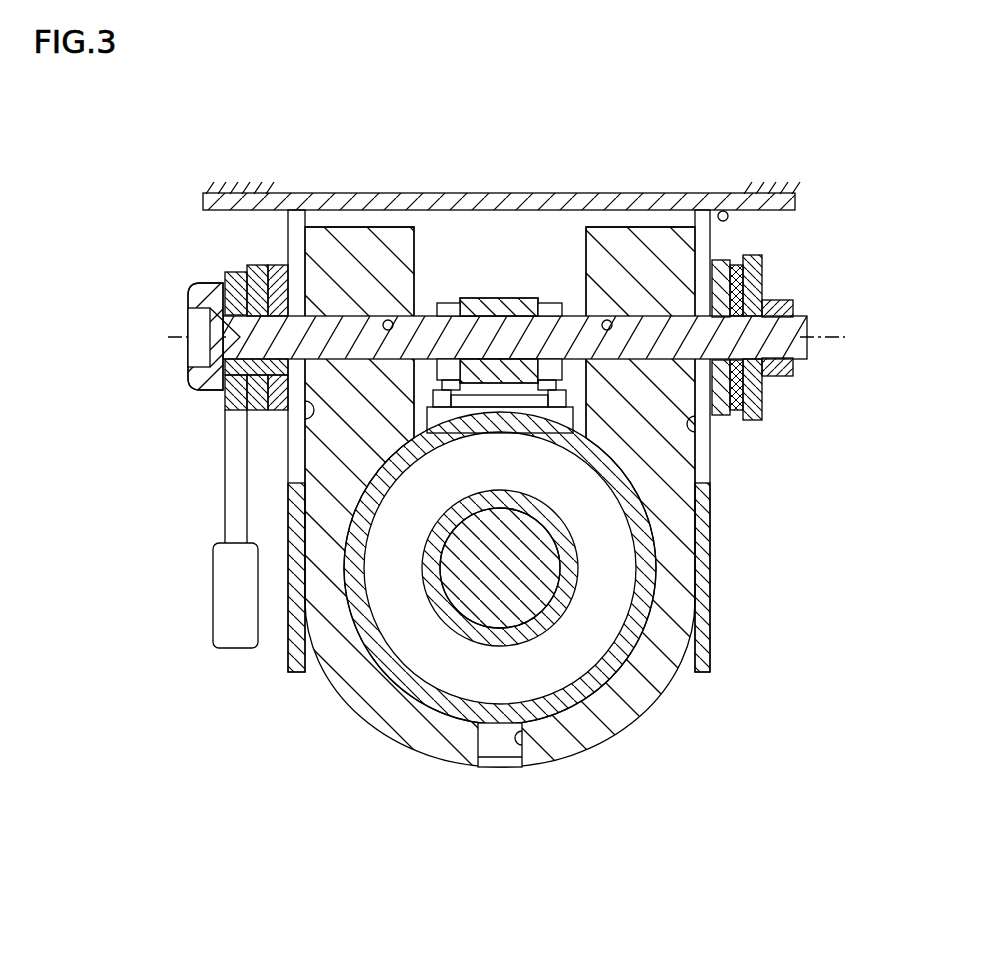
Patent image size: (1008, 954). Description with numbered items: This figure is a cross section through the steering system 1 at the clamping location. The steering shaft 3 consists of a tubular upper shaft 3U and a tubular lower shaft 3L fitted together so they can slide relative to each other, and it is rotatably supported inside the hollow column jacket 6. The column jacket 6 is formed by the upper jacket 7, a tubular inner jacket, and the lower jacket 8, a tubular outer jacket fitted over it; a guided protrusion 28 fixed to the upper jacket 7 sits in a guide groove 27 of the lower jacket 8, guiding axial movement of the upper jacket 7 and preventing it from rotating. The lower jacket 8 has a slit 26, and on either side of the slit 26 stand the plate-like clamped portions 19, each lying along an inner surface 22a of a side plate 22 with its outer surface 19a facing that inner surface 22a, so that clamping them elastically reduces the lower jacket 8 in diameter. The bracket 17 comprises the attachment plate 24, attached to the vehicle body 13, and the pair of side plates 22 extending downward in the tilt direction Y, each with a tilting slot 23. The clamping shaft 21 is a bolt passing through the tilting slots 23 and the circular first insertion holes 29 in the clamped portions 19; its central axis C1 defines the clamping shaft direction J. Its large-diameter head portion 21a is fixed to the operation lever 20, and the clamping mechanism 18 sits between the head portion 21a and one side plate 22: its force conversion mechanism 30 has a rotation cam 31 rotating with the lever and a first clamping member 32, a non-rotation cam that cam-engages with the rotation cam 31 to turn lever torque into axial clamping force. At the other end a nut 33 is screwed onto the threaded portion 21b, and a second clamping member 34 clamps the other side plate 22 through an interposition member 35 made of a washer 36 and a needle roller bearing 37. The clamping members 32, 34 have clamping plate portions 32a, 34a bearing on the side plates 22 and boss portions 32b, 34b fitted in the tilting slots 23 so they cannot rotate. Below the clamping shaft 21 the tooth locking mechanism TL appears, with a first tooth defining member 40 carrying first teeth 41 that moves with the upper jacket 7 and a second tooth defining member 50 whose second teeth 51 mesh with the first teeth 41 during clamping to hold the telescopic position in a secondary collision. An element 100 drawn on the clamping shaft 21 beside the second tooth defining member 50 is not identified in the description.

The steering system 1 is at (828, 166).
The steering shaft 3 is at (616, 570).
The lower shaft 3L is at (539, 572).
The upper shaft 3U is at (565, 612).
The column jacket 6 is at (504, 521).
The upper jacket 7 is at (440, 700).
The lower jacket 8 is at (385, 705).
The vehicle body 13 is at (233, 191).
The bracket 17 is at (556, 191).
The clamping mechanism 18 is at (170, 371).
The clamped portions 19 is at (388, 235).
The outer surface 19a is at (302, 448).
The operation lever 20 is at (235, 522).
The clamping shaft 21 is at (214, 345).
The head portion 21a is at (195, 300).
The threaded portion 21b is at (798, 311).
The side plates 22 is at (297, 212).
The inner surface 22a is at (300, 420).
The tilting slots 23 is at (296, 478).
The attachment plate 24 is at (462, 200).
The slit 26 is at (530, 235).
The guide groove 27 is at (512, 735).
The guided protrusion 28 is at (495, 750).
The first insertion hole 29 is at (378, 300).
The force conversion mechanism 30 is at (210, 314).
The rotation cam 31 is at (238, 273).
The first clamping member 32 is at (260, 268).
The clamping plate portion 32a is at (265, 264).
The boss portion 32b is at (302, 325).
The nut 33 is at (760, 305).
The second clamping member 34 is at (738, 268).
The clamping plate portion 34a is at (718, 290).
The boss portion 34b is at (695, 340).
The interposition member 35 is at (795, 399).
The washer 36 is at (750, 375).
The needle roller bearing 37 is at (758, 406).
The first tooth defining member 40 is at (422, 413).
The first teeth 41 is at (438, 434).
The second tooth defining member 50 is at (545, 304).
The second teeth 51 is at (446, 405).
The center boss 100 is at (478, 299).
The axis C1 is at (198, 337).
The clamping shaft direction J is at (108, 337).
The tooth locking mechanism TL is at (478, 282).
The tilt direction Y is at (655, 748).